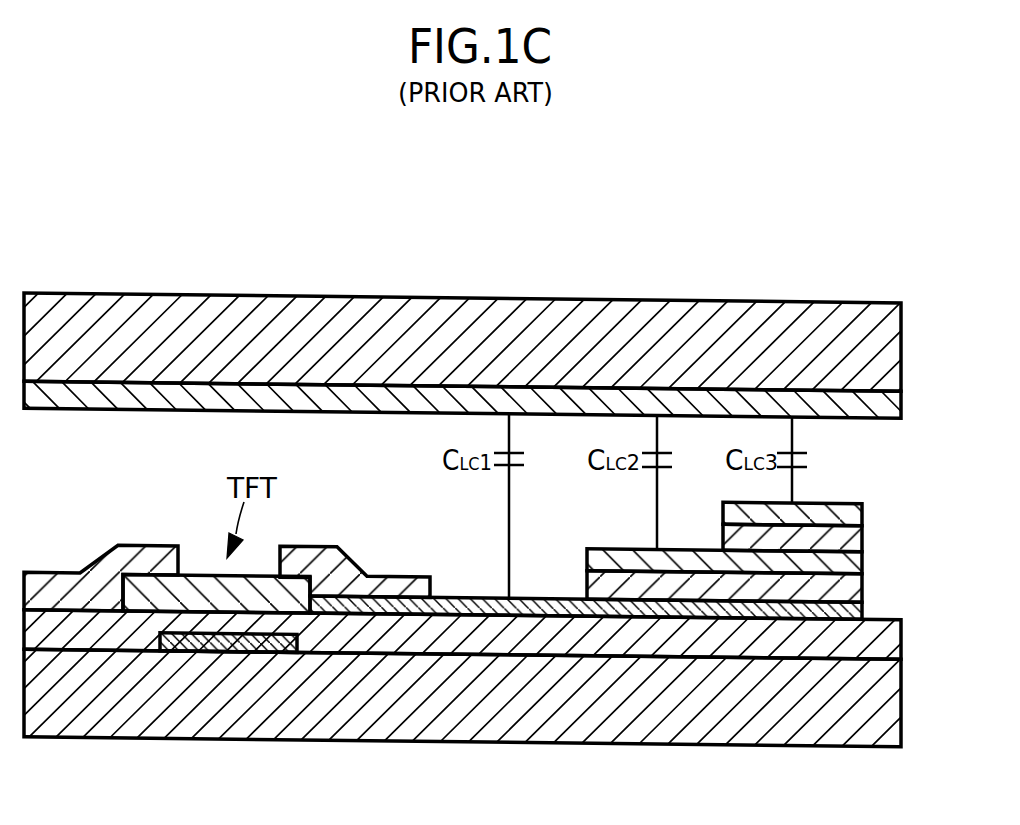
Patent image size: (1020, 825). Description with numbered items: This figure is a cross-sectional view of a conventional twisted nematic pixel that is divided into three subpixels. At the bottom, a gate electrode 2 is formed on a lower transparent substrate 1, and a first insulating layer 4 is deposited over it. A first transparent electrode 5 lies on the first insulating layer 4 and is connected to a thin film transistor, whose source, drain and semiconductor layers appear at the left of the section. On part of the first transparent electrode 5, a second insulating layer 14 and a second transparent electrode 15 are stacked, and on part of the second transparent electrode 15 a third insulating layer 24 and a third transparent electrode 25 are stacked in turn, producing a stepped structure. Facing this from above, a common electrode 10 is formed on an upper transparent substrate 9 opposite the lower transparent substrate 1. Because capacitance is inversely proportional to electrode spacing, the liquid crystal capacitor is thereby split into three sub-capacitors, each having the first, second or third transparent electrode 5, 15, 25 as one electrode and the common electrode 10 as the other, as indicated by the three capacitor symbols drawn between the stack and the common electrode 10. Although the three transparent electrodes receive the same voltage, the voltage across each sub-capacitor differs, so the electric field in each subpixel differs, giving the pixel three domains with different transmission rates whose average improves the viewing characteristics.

The lower transparent substrate 1 is at (125, 725).
The gate electrode 2 is at (252, 652).
The first insulating layer 4 is at (465, 625).
The first transparent electrode 5 is at (557, 607).
The upper transparent substrate 9 is at (329, 312).
The common electrode 10 is at (179, 417).
The second insulating layer 14 is at (848, 587).
The second transparent electrode 15 is at (690, 552).
The third insulating layer 24 is at (848, 541).
The third transparent electrode 25 is at (838, 510).